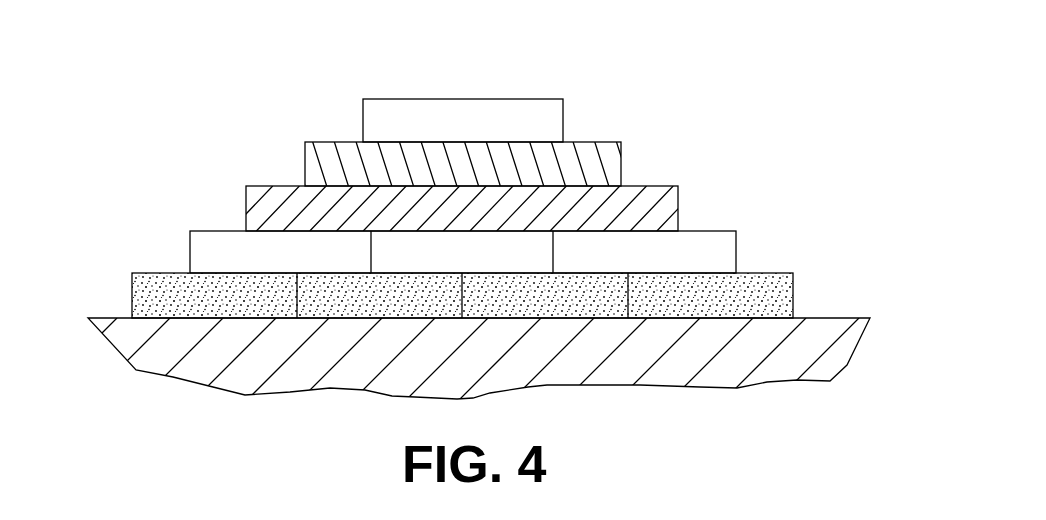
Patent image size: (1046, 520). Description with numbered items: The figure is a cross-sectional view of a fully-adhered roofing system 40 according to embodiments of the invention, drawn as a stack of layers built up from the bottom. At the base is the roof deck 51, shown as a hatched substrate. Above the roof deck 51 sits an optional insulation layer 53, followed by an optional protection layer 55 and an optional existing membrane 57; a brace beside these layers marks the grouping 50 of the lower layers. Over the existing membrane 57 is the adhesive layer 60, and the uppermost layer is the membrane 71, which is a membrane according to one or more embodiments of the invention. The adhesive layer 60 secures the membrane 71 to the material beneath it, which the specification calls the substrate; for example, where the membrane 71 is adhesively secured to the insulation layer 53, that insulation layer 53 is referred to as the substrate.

The roofing system 40 is at (207, 117).
The multilayer stack 50 is at (805, 188).
The roof deck 51 is at (129, 345).
The insulation layer 53 is at (132, 283).
The protection layer 55 is at (190, 237).
The existing membrane 57 is at (246, 213).
The adhesive layer 60 is at (621, 165).
The membrane 71 is at (518, 99).